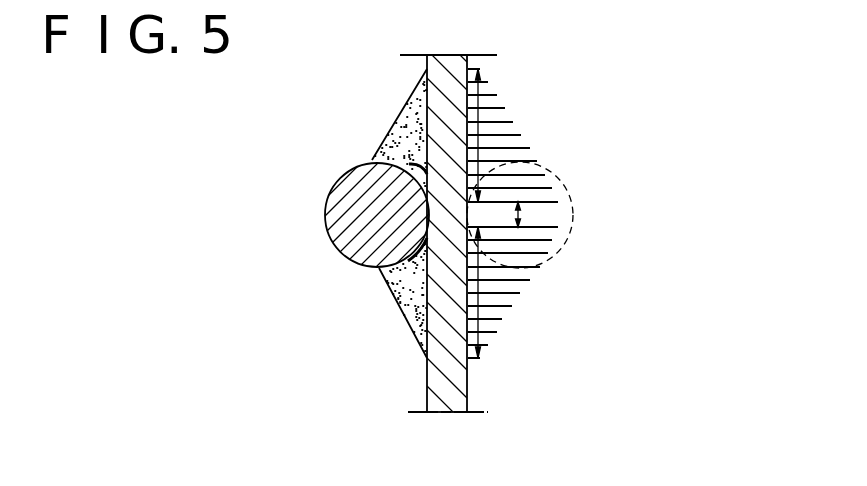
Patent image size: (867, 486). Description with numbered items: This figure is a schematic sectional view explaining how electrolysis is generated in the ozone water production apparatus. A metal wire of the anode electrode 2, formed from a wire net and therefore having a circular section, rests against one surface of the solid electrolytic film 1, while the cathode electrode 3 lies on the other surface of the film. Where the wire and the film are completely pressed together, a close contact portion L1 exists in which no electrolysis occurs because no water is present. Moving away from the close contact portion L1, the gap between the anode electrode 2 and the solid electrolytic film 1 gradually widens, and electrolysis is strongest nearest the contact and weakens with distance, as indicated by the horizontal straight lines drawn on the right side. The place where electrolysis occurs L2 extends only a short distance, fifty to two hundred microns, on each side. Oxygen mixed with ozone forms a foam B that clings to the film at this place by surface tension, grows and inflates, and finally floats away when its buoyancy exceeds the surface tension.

The solid electrolytic film 1 is at (432, 383).
The anode electrode 2 is at (338, 243).
The cathode electrode 3 is at (559, 253).
The foam B is at (418, 272).
The close contact portion L1 is at (522, 212).
The place where electrolysis occurs L2 is at (480, 280).